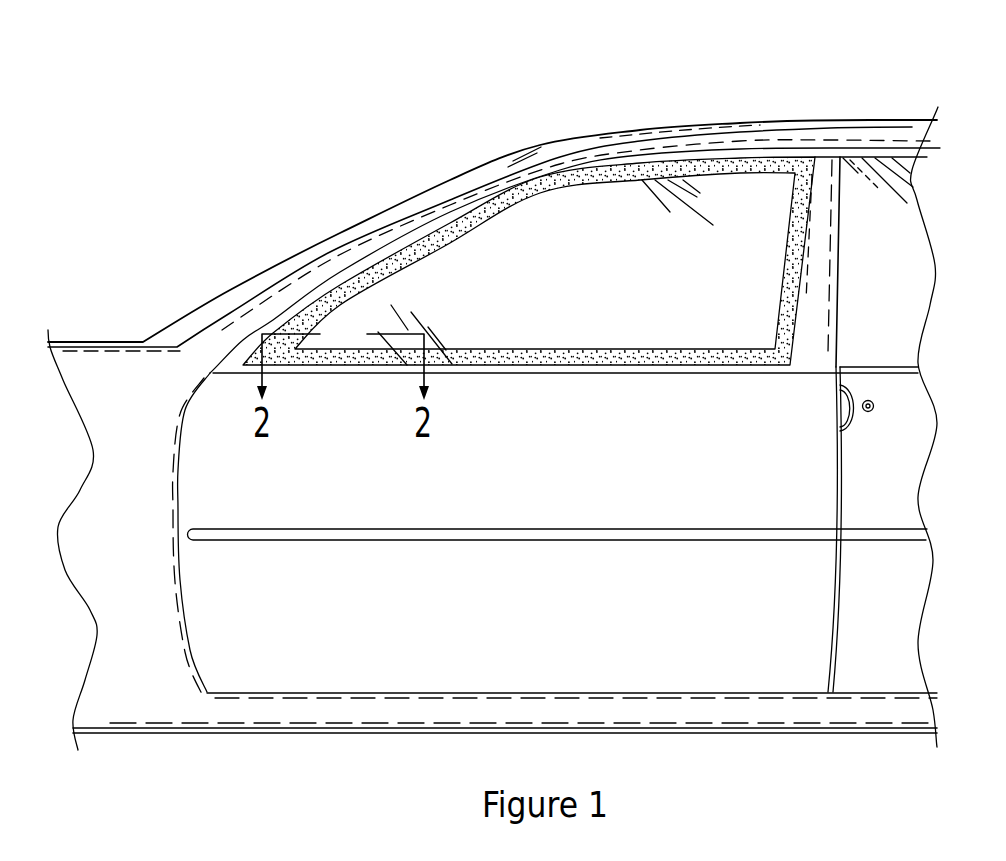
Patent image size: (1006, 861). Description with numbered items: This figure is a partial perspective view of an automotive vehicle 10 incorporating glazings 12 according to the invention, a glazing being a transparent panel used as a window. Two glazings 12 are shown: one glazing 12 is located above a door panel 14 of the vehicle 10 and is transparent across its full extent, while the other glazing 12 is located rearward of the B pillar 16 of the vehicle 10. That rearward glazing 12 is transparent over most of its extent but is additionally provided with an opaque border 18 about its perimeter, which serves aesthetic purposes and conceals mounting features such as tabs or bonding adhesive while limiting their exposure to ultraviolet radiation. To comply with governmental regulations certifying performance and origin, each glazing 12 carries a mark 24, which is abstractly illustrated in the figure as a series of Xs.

The automotive vehicle 10 is at (236, 124).
The glazing 12 is at (713, 193).
The door panel 14 is at (873, 653).
The B pillar 16 is at (825, 175).
The opaque border 18 is at (608, 173).
The mark 24 is at (327, 310).